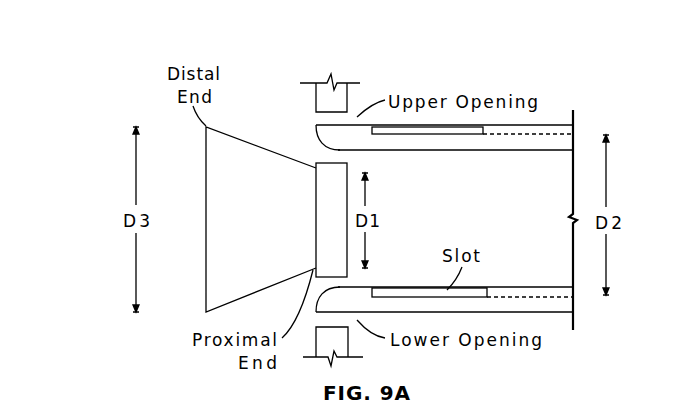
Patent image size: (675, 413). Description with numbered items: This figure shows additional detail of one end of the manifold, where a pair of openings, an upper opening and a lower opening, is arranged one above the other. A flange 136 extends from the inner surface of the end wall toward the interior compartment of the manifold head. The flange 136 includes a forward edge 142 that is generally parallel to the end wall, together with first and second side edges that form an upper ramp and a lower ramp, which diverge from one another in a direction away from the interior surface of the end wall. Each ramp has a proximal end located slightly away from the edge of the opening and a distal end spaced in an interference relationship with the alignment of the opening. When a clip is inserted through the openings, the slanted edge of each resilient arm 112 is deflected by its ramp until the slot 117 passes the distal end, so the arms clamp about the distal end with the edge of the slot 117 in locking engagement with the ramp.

The flange 136 is at (124, 88).
The forward edge 142 is at (203, 303).
The slot 117 is at (384, 133).
The resilient arm 112 is at (570, 146).